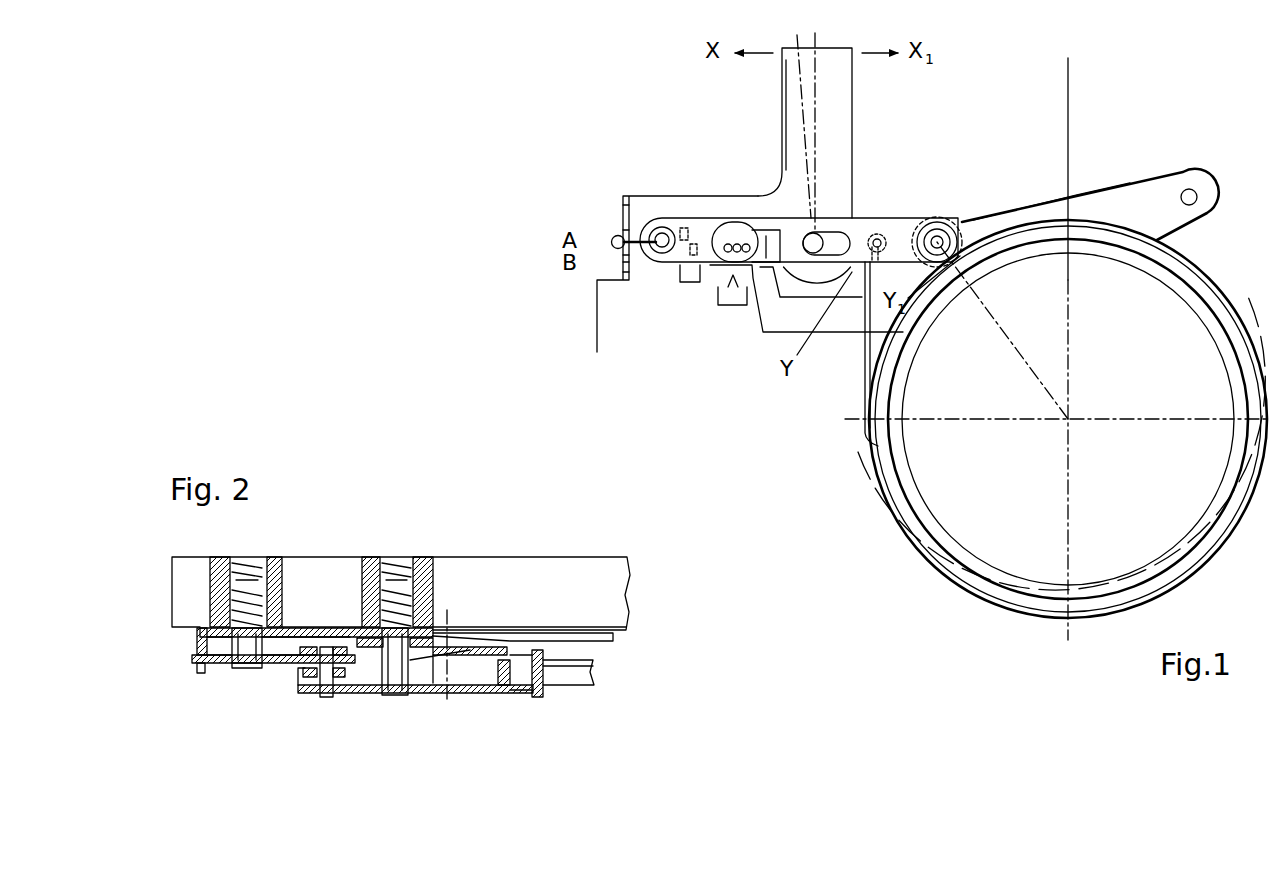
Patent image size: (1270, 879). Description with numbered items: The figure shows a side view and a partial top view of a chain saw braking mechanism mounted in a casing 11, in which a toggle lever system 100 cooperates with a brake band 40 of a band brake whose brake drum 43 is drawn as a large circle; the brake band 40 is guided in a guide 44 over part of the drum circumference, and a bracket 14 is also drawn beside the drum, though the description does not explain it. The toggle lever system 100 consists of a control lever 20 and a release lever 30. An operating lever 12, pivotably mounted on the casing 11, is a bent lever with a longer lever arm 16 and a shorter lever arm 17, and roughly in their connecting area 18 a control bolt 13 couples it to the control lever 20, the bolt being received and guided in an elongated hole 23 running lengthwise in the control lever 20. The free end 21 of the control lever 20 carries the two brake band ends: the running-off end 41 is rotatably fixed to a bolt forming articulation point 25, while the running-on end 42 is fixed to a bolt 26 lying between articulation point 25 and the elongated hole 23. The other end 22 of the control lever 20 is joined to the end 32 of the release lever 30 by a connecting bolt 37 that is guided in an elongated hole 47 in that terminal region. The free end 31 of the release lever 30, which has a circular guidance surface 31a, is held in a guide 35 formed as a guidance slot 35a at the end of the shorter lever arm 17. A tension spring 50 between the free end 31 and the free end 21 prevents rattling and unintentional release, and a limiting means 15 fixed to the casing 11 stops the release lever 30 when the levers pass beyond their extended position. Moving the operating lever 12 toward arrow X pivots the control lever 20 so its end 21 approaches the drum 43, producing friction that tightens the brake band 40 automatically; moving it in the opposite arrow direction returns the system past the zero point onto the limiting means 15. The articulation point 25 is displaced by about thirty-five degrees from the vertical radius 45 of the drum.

In FIG. 1, the casing 11 is at (1010, 158).
In FIG. 1, the operating lever 12 is at (828, 97).
In FIG. 2, the operating lever 12 is at (302, 630).
In FIG. 1, the control bolt 13 is at (862, 210).
In FIG. 2, the control bolt 13 is at (393, 694).
In FIG. 1, the fork bracket 14 is at (858, 432).
In FIG. 1, the limiting means 15 is at (737, 305).
In FIG. 1, the longer lever arm 16 is at (790, 98).
In FIG. 1, the shorter lever arm 17 is at (640, 198).
In FIG. 1, the connecting area 18 is at (838, 218).
In FIG. 1, the control lever 20 is at (838, 185).
In FIG. 2, the control lever 20 is at (478, 692).
In FIG. 1, the free end of control lever 21 is at (938, 222).
In FIG. 1, the end of control lever 22 is at (772, 225).
In FIG. 1, the elongated hole 23 is at (880, 234).
In FIG. 1, the articulation point 25 is at (980, 215).
In FIG. 2, the articulation point 25 is at (540, 692).
In FIG. 1, the bolt 26 is at (893, 236).
In FIG. 1, the release lever 30 is at (668, 258).
In FIG. 2, the release lever 30 is at (270, 667).
In FIG. 1, the free end of release lever 31 is at (650, 262).
In FIG. 1, the circular guidance surface 31a is at (613, 240).
In FIG. 1, the other end of release lever 32 is at (760, 222).
In FIG. 1, the guide 35 is at (618, 208).
In FIG. 1, the guidance slot 35a is at (622, 262).
In FIG. 1, the connecting bolt 37 is at (708, 228).
In FIG. 2, the connecting bolt 37 is at (322, 692).
In FIG. 2, the brake band 40 is at (585, 675).
In FIG. 1, the running-off end of brake band 41 is at (1078, 200).
In FIG. 2, the running-off end of brake band 41 is at (641, 660).
In FIG. 1, the running-on end of brake band 42 is at (905, 228).
In FIG. 1, the brake drum 43 is at (965, 515).
In FIG. 1, the guide 44 is at (1037, 622).
In FIG. 1, the vertical radius 45 is at (1068, 118).
In FIG. 1, the elongated hole 47 is at (676, 226).
In FIG. 1, the tension spring 50 is at (691, 256).
In FIG. 1, the toggle lever system 100 is at (733, 212).